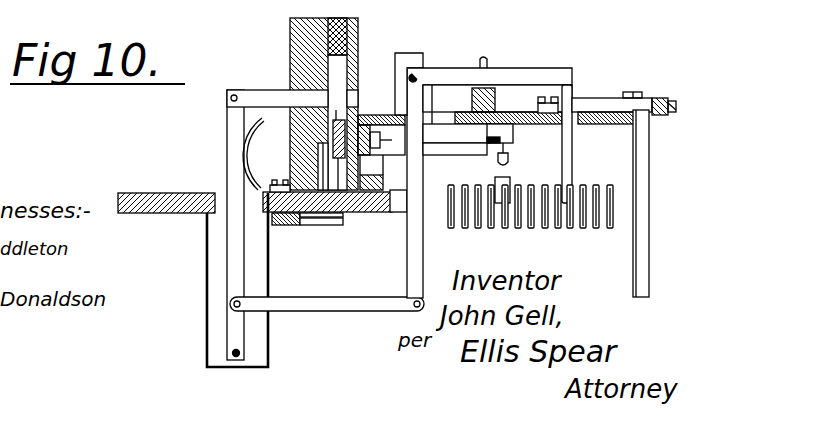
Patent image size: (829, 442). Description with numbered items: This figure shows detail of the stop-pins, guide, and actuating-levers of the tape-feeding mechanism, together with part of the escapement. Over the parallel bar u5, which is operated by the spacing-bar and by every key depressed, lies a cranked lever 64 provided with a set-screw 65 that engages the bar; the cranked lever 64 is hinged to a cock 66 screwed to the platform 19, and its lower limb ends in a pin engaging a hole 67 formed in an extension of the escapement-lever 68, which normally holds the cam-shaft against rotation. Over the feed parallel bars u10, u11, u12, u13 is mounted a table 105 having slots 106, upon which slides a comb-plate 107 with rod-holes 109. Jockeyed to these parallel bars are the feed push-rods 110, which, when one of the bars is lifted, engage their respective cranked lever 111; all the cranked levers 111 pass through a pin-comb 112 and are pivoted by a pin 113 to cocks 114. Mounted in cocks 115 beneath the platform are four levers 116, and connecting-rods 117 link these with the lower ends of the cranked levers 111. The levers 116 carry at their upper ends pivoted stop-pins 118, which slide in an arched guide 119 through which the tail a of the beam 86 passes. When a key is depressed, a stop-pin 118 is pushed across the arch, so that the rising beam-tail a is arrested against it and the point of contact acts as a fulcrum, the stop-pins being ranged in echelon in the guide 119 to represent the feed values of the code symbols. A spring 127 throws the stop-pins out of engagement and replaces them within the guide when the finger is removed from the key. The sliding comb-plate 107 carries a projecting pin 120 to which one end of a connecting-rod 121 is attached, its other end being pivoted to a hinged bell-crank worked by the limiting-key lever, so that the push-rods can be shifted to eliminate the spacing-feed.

The platform 19 is at (397, 209).
The cranked lever 64 is at (477, 151).
The set-screw 65 is at (495, 110).
The cock 66 is at (284, 183).
The hole 67 is at (333, 225).
The escapement-lever 68 is at (301, 226).
The beam 86 is at (323, 143).
The beam-tail a is at (307, 124).
The table 105 is at (516, 144).
The slots 106 is at (584, 118).
The comb-plate 107 is at (612, 99).
The rod-holes 109 is at (559, 128).
The feed push-rods 110 is at (573, 178).
The cranked levers 111 is at (543, 63).
The pin-comb 112 is at (488, 54).
The pin 113 is at (411, 79).
The cocks 114 is at (428, 59).
The cocks 115 is at (217, 306).
The levers 116 is at (238, 260).
The connecting-rods 117 is at (377, 300).
The stop-pins 118 is at (272, 97).
The arched guide 119 is at (359, 38).
The projecting pin 120 is at (665, 97).
The connecting-rod 121 is at (651, 116).
The spring 127 is at (243, 152).
The parallel bar u5 is at (504, 229).
The feed parallel bar u10 is at (569, 229).
The feed parallel bar u11 is at (584, 229).
The feed parallel bar u12 is at (597, 218).
The feed parallel bar u13 is at (613, 197).